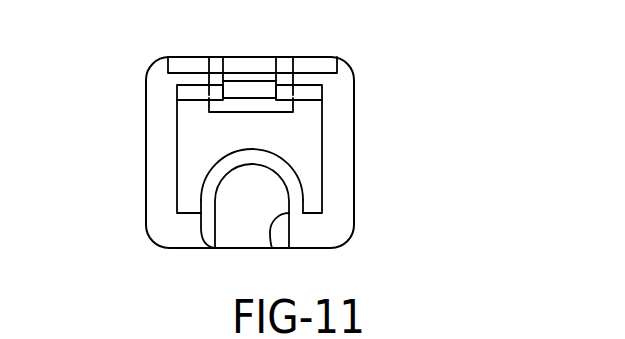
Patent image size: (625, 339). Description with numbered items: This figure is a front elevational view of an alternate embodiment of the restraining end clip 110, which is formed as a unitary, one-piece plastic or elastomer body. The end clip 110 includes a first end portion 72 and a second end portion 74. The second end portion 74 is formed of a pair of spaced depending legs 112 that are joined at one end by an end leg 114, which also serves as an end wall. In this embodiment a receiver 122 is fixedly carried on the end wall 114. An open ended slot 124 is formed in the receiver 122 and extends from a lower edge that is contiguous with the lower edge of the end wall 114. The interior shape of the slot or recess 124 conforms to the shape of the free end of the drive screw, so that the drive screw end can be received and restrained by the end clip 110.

The first end portion 72 is at (197, 48).
The second end portion 74 is at (132, 137).
The restraining end clip 110 is at (132, 82).
The depending legs 112 is at (157, 155).
The end leg 114 is at (185, 237).
The receiver 122 is at (285, 197).
The open ended slot 124 is at (275, 249).